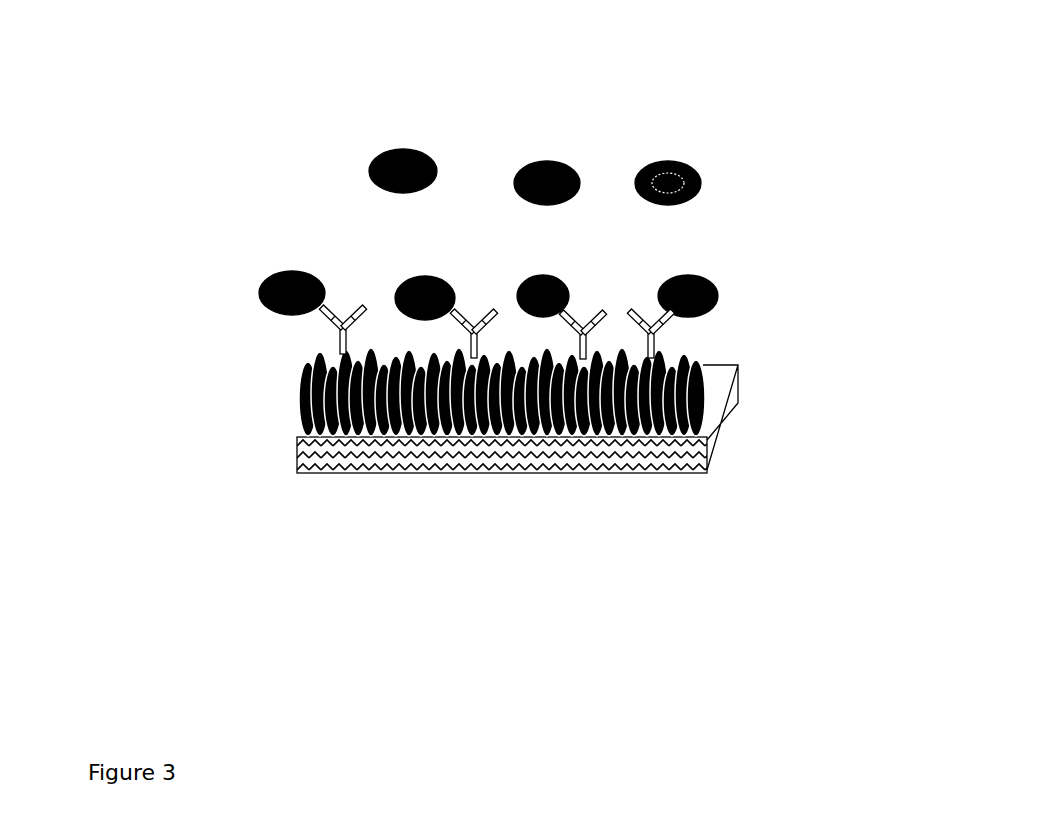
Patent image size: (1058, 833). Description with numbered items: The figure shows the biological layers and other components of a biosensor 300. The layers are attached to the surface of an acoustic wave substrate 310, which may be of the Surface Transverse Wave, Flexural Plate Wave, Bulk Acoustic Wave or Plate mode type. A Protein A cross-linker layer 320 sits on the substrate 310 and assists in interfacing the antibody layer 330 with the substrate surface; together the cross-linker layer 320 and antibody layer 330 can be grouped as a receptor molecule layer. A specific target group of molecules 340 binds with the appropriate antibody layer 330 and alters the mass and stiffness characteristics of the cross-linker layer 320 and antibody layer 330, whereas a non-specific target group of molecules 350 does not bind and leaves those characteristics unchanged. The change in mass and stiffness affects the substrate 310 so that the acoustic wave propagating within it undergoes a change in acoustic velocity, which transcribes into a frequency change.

The biosensor 300 is at (215, 483).
The acoustic wave substrate 310 is at (706, 467).
The Protein A cross-linker layer 320 is at (283, 445).
The antibody layer 330 is at (733, 360).
The specific target group of molecules 340 is at (640, 280).
The non-specific target group of molecules 350 is at (445, 150).